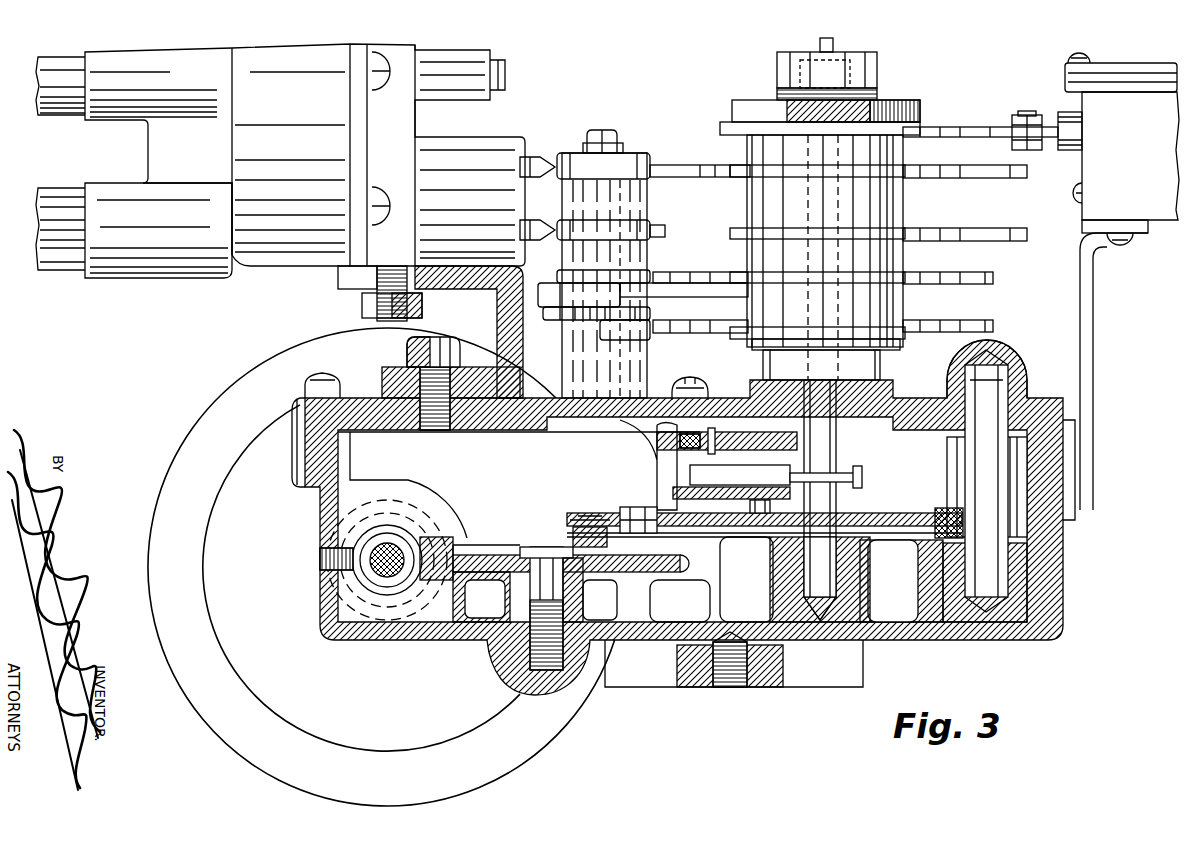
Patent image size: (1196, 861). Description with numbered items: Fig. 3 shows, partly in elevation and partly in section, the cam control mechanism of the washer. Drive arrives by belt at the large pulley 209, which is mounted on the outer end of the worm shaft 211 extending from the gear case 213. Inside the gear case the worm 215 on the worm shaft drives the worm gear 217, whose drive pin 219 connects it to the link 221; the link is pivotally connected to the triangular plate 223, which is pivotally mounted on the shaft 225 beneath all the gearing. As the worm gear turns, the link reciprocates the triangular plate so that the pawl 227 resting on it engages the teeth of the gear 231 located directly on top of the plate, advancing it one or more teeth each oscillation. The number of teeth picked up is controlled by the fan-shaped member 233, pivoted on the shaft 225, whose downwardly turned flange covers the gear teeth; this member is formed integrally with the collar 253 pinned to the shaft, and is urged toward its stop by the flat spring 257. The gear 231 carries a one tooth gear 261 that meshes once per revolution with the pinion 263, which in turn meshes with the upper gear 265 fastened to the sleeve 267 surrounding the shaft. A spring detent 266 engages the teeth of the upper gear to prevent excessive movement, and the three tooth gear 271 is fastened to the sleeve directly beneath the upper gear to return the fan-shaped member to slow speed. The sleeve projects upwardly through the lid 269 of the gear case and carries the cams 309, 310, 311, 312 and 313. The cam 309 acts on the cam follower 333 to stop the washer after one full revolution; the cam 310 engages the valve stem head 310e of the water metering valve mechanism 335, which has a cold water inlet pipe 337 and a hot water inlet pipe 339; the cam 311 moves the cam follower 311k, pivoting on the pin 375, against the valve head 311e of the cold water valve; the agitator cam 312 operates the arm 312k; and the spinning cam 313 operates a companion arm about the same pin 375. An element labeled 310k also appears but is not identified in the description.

The large pulley 209 is at (540, 745).
The worm shaft 211 is at (383, 547).
The gear case 213 is at (900, 637).
The worm 215 is at (413, 548).
The worm gear 217 is at (492, 555).
The drive pin 219 is at (605, 520).
The link 221 is at (740, 540).
The triangular plate 223 is at (862, 533).
The shaft 225 is at (830, 50).
The pawl 227 is at (618, 522).
The gear 231 is at (712, 540).
The fan-shaped member 233 is at (668, 482).
The collar 253 is at (866, 477).
The flat spring 257 is at (731, 482).
The one tooth gear 261 is at (905, 515).
The pinion 263 is at (1013, 495).
The upper gear 265 is at (670, 432).
The spring detent 266 is at (1010, 440).
The sleeve 267 is at (887, 373).
The lid 269 is at (720, 398).
The three tooth gear 271 is at (657, 446).
The cam 309 is at (1000, 130).
The cam 310 is at (998, 158).
The cam 311 is at (1000, 215).
The agitator cam 312 is at (940, 275).
The spinning cam 313 is at (962, 326).
The valve stem head 310e is at (535, 157).
The valve head 311e is at (500, 283).
The contact stack 310k is at (572, 153).
The cam follower 311k is at (660, 230).
The arm 312k is at (690, 285).
The cam follower 333 is at (1043, 130).
The water metering valve mechanism 335 is at (205, 268).
The cold water inlet pipe 337 is at (85, 268).
The hot water inlet pipe 339 is at (85, 102).
The pin 375 is at (612, 132).